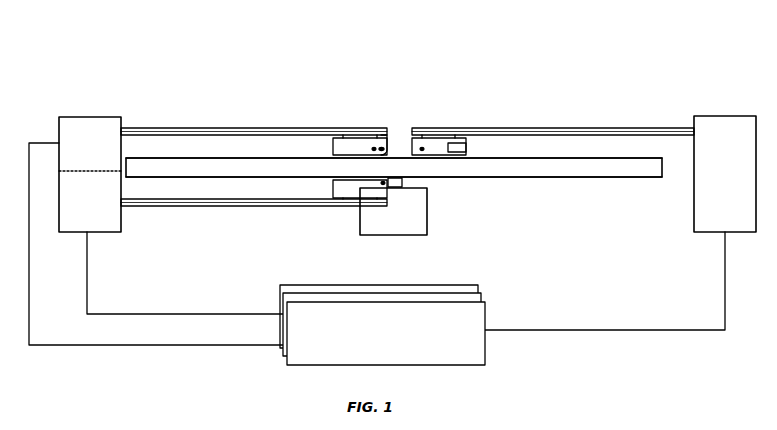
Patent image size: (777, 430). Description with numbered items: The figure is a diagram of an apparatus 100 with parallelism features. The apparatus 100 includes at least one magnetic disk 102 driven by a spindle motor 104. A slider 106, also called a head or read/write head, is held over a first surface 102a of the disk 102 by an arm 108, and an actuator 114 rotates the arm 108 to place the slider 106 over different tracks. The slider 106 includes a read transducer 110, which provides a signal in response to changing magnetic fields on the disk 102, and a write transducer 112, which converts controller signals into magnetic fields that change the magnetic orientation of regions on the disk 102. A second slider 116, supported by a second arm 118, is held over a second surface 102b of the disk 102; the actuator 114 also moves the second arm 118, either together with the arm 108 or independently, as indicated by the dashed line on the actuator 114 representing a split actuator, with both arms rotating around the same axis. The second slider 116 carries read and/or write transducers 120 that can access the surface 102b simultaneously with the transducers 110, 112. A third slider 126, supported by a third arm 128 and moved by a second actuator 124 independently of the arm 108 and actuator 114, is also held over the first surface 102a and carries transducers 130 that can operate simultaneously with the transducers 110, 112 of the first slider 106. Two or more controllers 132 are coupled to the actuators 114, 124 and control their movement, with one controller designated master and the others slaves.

The apparatus 100 is at (514, 70).
The magnetic disk 102 is at (624, 178).
The first surface of the disk 102a is at (540, 157).
The second surface of the disk 102b is at (561, 178).
The spindle motor 104 is at (372, 236).
The slider 106 is at (345, 146).
The arm 108 is at (237, 128).
The read transducer 110 is at (385, 130).
The write transducer 112 is at (372, 146).
The actuator 114 is at (82, 118).
The second slider 116 is at (343, 192).
The second arm 118 is at (228, 207).
The read and/or write transducers 120 is at (405, 182).
The second actuator 124 is at (717, 117).
The third slider 126 is at (438, 146).
The third arm 128 is at (561, 128).
The read and/or write transducers 130 is at (422, 149).
The controllers 132 is at (450, 291).